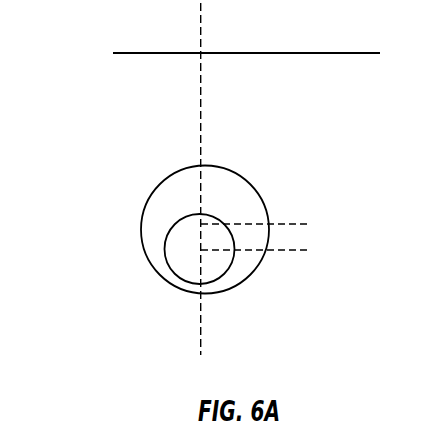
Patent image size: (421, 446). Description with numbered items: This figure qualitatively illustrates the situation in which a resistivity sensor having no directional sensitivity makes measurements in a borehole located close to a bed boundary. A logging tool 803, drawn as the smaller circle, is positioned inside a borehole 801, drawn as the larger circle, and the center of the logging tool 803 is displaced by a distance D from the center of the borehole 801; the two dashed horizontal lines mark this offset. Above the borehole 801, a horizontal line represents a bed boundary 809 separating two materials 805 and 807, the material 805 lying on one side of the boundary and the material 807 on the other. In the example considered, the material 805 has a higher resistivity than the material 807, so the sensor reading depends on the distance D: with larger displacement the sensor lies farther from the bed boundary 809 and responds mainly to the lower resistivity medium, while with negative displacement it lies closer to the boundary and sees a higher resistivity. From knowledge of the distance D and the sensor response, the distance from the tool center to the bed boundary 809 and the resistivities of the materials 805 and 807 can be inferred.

The borehole 801 is at (141, 237).
The logging tool 803 is at (172, 270).
The material 805 is at (246, 39).
The material 807 is at (246, 70).
The bed boundary 809 is at (221, 39).
The distance D is at (264, 243).